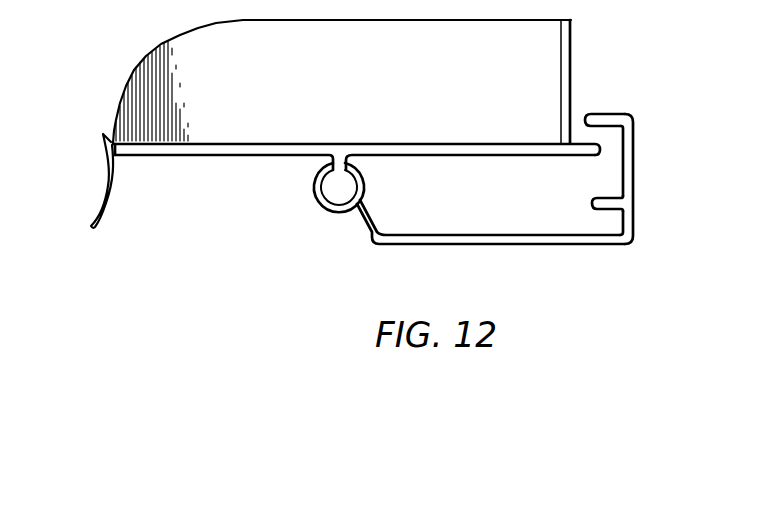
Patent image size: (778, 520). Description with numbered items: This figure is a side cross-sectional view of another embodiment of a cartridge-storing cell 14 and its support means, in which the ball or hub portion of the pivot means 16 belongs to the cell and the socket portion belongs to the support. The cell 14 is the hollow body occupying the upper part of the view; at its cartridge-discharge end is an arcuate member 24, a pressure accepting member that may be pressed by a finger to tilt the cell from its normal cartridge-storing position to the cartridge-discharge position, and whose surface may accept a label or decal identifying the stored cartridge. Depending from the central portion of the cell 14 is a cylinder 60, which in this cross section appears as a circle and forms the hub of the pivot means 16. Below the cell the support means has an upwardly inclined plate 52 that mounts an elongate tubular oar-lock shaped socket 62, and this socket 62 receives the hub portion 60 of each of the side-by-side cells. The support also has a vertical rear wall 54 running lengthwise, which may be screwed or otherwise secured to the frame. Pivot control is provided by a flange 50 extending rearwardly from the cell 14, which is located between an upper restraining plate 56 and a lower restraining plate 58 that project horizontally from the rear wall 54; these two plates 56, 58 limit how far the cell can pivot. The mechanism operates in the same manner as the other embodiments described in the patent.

The cell 14 is at (356, 90).
The arcuate member 24 is at (91, 175).
The pivot means 16 is at (291, 180).
The cylinder 60 is at (326, 186).
The oar-lock shaped socket 62 is at (362, 177).
The upwardly inclined plate 52 is at (359, 212).
The rear wall 54 is at (629, 153).
The flange 50 is at (577, 147).
The upper restraining plate 56 is at (578, 116).
The lower restraining plate 58 is at (589, 188).